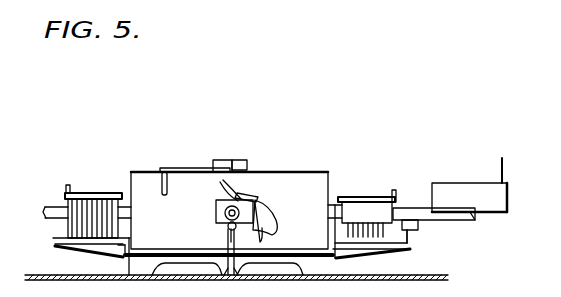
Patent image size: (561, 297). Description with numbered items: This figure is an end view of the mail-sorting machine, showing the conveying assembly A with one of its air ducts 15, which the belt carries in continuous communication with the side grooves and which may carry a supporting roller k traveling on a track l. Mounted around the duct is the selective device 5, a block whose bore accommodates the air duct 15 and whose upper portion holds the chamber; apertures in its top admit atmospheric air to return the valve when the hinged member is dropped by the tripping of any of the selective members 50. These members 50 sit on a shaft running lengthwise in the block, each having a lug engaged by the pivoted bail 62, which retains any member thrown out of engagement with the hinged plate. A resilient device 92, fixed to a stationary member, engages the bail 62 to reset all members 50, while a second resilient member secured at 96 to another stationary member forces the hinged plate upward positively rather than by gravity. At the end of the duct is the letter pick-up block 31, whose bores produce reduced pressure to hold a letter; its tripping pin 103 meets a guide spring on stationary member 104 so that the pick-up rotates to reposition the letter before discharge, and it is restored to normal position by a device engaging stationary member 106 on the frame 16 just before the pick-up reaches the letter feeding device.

The air duct 15 is at (55, 221).
The stationary member 104 is at (207, 168).
The stationary member 106 is at (158, 190).
The resilient device 92 is at (222, 183).
The selective device 5 is at (216, 207).
The pivoted bail 62 is at (255, 197).
The selective member 50 is at (272, 216).
The securing point of resilient member 96 is at (231, 242).
The housing A is at (315, 187).
The block 31 is at (456, 192).
The tripping pin 103 is at (503, 171).
The supporting roller k is at (412, 221).
The track l is at (413, 238).
The frame 16 is at (556, 278).